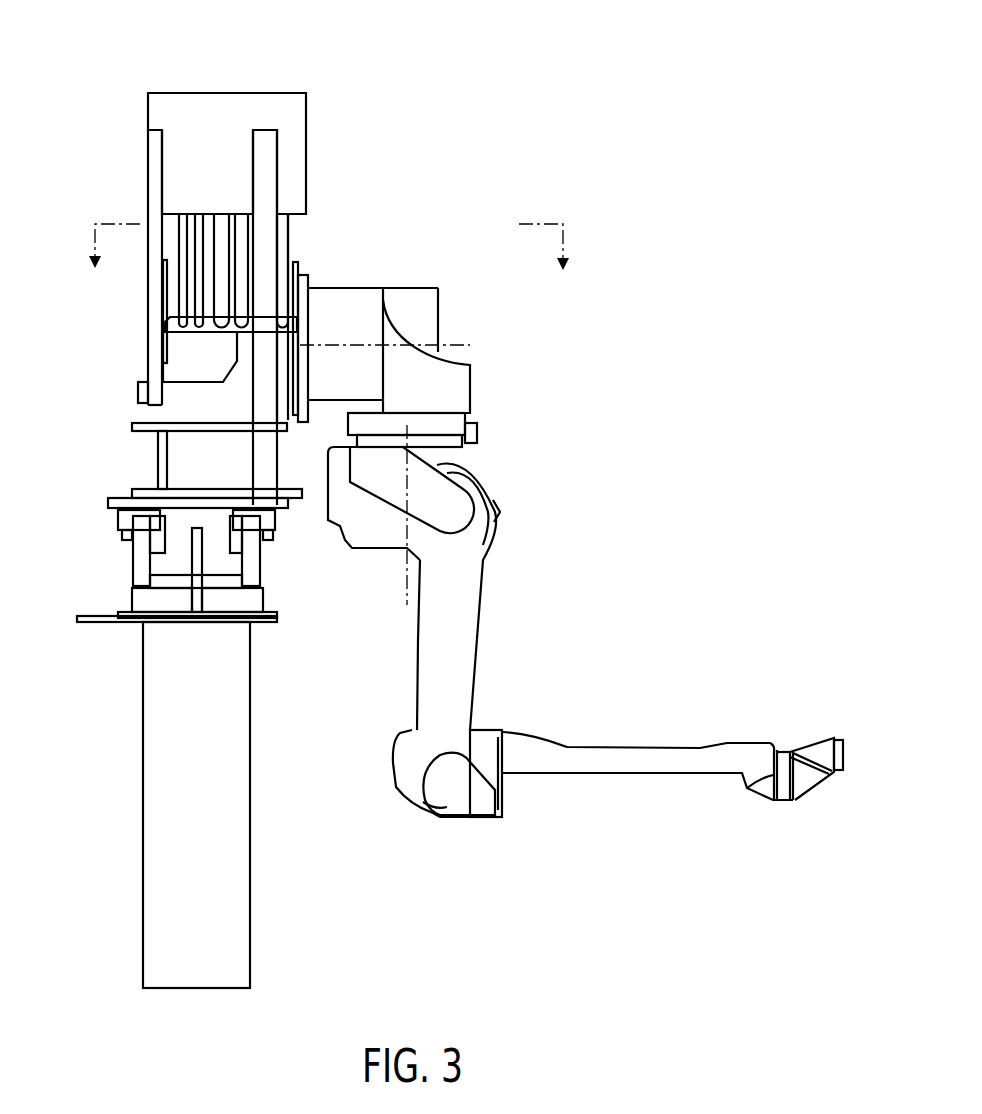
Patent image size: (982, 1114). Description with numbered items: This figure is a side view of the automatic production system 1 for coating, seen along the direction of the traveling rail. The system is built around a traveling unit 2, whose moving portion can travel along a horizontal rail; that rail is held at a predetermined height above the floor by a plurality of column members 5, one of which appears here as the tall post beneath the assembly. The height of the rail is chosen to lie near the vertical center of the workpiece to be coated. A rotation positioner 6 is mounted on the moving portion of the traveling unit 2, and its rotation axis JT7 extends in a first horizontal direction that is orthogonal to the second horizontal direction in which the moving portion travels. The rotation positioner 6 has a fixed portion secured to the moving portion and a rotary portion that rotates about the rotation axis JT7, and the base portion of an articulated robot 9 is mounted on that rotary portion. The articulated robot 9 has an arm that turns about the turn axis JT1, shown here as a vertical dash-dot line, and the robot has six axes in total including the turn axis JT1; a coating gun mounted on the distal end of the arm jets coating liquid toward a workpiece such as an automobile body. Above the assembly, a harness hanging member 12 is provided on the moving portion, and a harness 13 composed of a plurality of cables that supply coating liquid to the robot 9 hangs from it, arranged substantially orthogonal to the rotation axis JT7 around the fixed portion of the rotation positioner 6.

The automatic production system 1 is at (603, 118).
The traveling unit 2 is at (140, 490).
The column member 5 is at (157, 805).
The rotation positioner 6 is at (208, 399).
The articulated robot 9 is at (656, 682).
The harness hanging member 12 is at (232, 100).
The harness 13 is at (222, 272).
The turn axis JT1 is at (405, 590).
The rotation axis JT7 is at (452, 345).